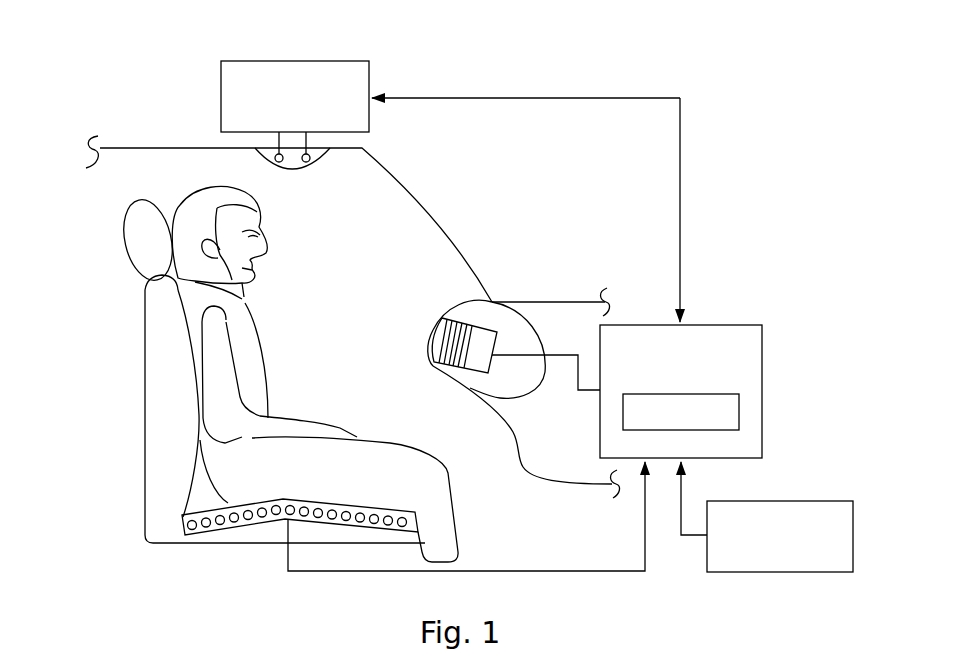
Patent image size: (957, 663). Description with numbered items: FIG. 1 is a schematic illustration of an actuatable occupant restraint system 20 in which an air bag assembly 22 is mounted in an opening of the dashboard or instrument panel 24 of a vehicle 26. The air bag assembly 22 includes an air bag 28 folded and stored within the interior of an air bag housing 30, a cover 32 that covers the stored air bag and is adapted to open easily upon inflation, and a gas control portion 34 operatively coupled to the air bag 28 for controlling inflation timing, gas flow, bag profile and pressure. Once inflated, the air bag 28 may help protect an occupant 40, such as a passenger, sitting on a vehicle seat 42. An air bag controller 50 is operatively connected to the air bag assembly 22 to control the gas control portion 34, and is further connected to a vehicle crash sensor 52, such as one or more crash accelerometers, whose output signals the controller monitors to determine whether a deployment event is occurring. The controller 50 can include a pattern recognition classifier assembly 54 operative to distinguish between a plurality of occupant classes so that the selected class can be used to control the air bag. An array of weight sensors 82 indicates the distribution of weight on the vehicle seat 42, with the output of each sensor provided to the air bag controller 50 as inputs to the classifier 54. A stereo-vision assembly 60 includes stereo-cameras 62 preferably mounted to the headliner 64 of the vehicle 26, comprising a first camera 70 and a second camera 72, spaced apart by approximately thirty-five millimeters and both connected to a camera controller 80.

The actuatable occupant restraint system 20 is at (585, 64).
The air bag assembly 22 is at (486, 312).
The instrument panel 24 is at (462, 298).
The vehicle 26 is at (166, 145).
The air bag 28 is at (435, 366).
The air bag housing 30 is at (470, 374).
The cover 32 is at (428, 338).
The gas control portion 34 is at (492, 385).
The occupant 40 is at (245, 303).
The vehicle seat 42 is at (139, 346).
The air bag controller 50 is at (732, 313).
The vehicle crash sensor 52 is at (791, 490).
The pattern recognition classifier assembly 54 is at (680, 430).
The stereo-vision assembly 60 is at (149, 44).
The stereo-cameras 62 is at (249, 165).
The headliner 64 is at (190, 149).
The first camera 70 is at (280, 176).
The second camera 72 is at (315, 170).
The camera controller 80 is at (352, 60).
The array of weight sensors 82 is at (220, 528).